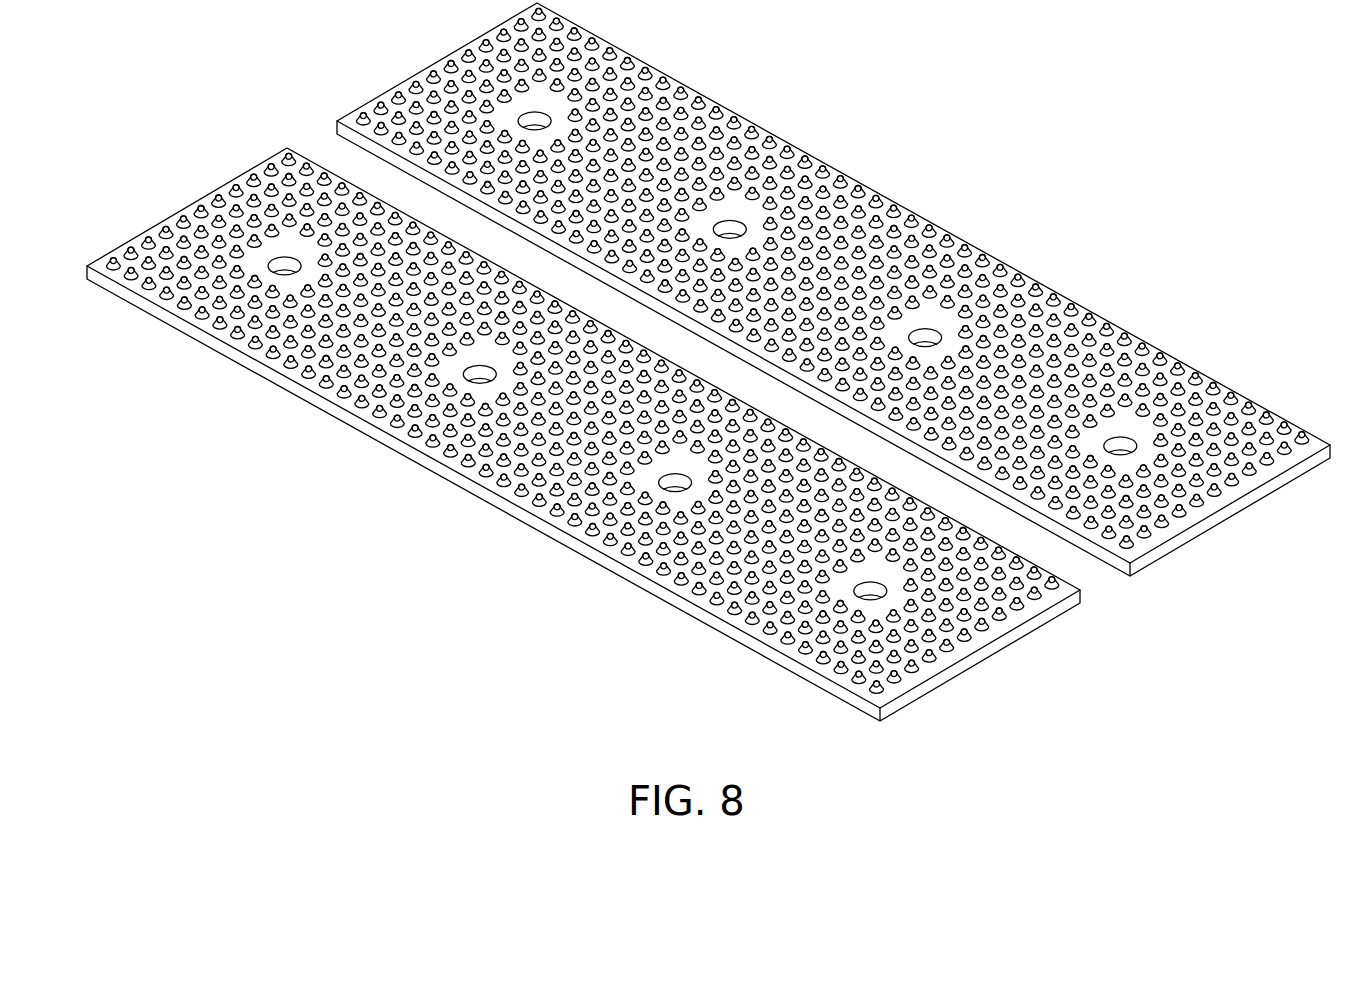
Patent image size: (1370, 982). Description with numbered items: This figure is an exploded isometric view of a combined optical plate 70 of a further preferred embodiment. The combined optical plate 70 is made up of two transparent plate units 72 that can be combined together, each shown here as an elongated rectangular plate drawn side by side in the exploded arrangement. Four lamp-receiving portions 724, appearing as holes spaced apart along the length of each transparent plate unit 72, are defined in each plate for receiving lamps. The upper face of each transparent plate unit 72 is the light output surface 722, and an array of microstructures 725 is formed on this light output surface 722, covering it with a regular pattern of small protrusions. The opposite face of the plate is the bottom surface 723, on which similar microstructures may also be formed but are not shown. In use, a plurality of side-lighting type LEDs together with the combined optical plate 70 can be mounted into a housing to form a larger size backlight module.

The combined optical plate 70 is at (449, 36).
The transparent plate unit 72 is at (764, 114).
The light output surface 722 is at (925, 291).
The bottom surface 723 is at (883, 408).
The lamp-receiving portion 724 is at (783, 328).
The microstructures 725 is at (725, 179).